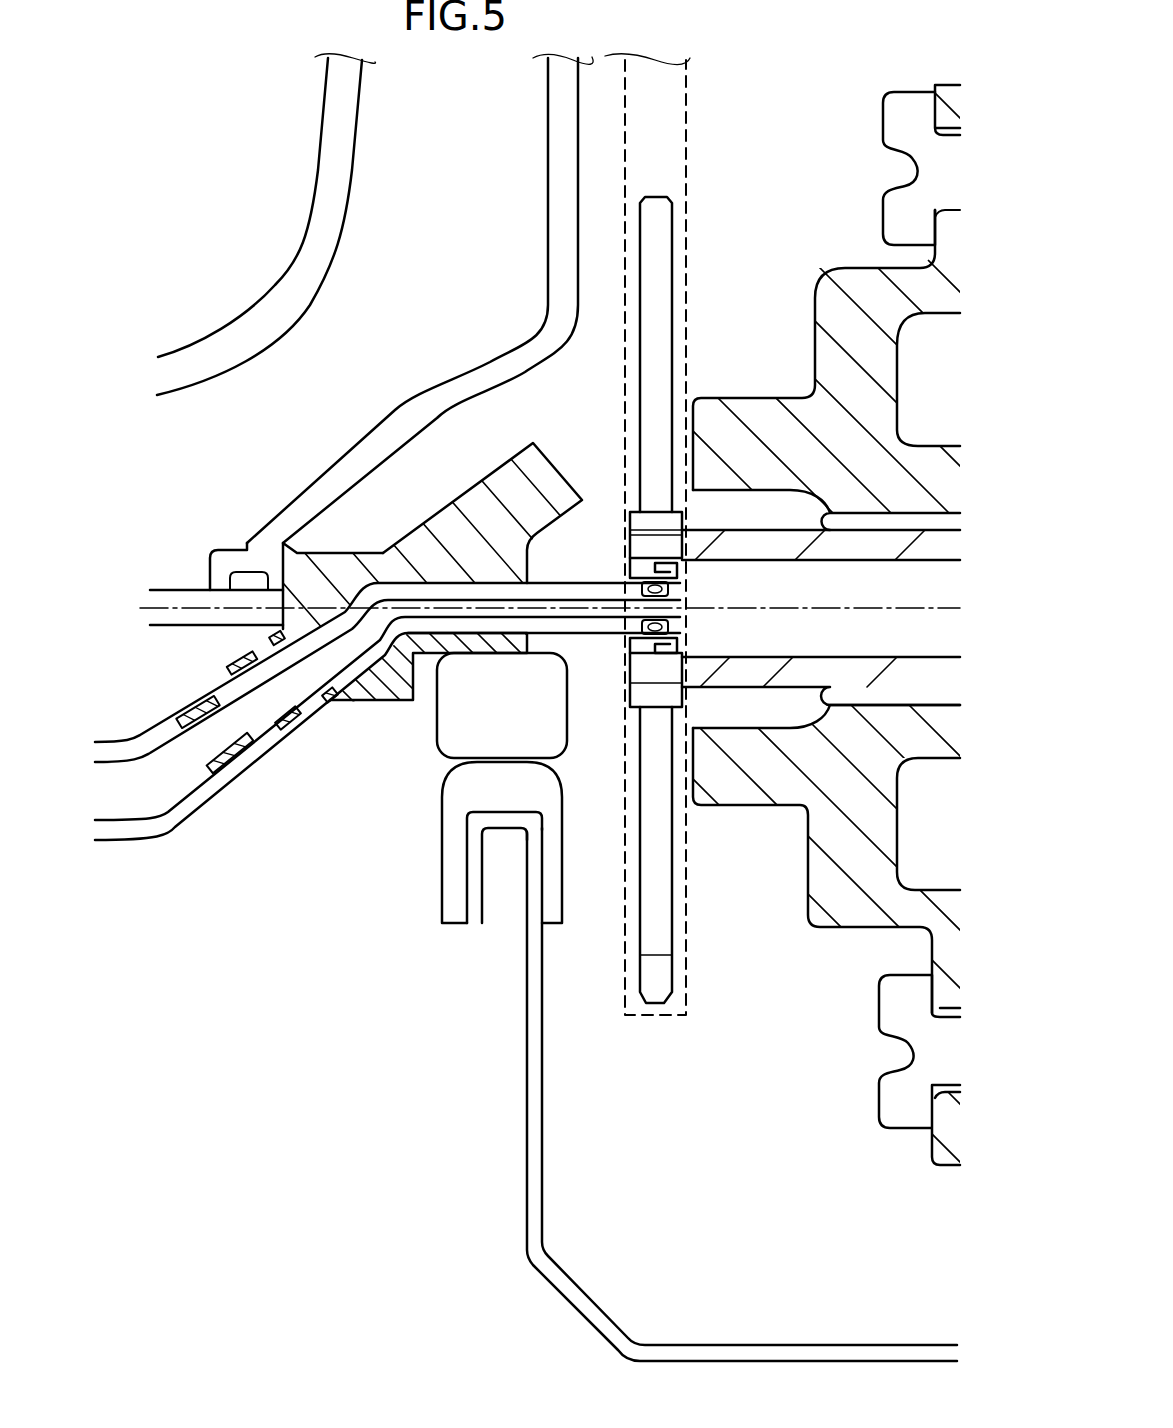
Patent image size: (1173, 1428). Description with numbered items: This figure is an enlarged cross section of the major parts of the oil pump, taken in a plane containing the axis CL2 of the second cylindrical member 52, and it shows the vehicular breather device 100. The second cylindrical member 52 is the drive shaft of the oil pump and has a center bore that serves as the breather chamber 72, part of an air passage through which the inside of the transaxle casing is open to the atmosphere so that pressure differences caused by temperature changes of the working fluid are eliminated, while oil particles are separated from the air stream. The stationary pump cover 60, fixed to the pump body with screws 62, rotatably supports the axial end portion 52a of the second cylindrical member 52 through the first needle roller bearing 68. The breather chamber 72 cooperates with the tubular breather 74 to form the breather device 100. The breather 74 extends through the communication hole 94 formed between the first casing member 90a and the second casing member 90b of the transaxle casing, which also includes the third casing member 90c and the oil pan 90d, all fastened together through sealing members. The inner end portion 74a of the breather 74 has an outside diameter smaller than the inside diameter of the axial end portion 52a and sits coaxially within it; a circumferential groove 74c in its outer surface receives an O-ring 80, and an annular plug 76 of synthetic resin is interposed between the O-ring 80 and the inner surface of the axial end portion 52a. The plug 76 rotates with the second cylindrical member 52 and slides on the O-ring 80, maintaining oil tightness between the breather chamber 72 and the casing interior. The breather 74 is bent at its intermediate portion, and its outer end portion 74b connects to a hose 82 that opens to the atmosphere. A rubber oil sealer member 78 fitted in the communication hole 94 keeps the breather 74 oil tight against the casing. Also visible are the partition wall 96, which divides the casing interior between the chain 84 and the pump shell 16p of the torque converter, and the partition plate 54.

The pump shell 16p is at (320, 203).
The partition wall 96 is at (565, 125).
The chain 84 is at (660, 105).
The partition plate 54 is at (657, 980).
The circumferential groove 74c is at (684, 586).
The inner end portion 74a is at (684, 626).
The O-ring 80 is at (655, 592).
The annular plug 76 is at (652, 640).
The vehicular breather device 100 is at (401, 547).
The oil sealer member 78 is at (483, 507).
The breather 74 is at (403, 593).
The breather chamber 72 is at (688, 558).
The outer end portion 74b is at (207, 766).
The hose 82 is at (227, 773).
The communication hole 94 is at (297, 593).
The first casing member 90a is at (184, 600).
The second casing member 90b is at (458, 740).
The third casing member 90c is at (455, 858).
The oil pan 90d is at (822, 1345).
The second cylindrical member 52 is at (750, 537).
The axial end portion 52a is at (628, 545).
The pump cover 60 is at (740, 793).
The first needle roller bearing 68 is at (900, 700).
The screws 62 is at (910, 117).
The axis CL2 is at (527, 607).